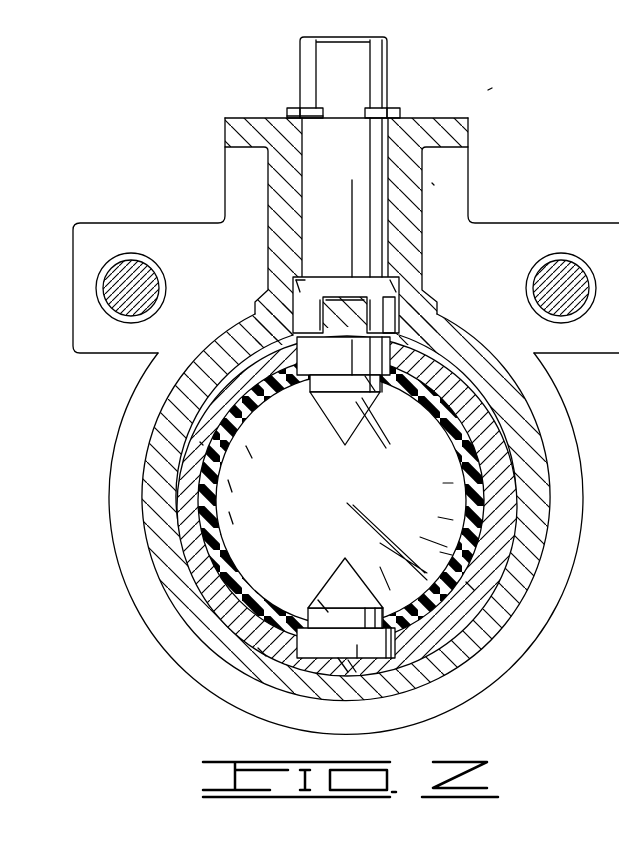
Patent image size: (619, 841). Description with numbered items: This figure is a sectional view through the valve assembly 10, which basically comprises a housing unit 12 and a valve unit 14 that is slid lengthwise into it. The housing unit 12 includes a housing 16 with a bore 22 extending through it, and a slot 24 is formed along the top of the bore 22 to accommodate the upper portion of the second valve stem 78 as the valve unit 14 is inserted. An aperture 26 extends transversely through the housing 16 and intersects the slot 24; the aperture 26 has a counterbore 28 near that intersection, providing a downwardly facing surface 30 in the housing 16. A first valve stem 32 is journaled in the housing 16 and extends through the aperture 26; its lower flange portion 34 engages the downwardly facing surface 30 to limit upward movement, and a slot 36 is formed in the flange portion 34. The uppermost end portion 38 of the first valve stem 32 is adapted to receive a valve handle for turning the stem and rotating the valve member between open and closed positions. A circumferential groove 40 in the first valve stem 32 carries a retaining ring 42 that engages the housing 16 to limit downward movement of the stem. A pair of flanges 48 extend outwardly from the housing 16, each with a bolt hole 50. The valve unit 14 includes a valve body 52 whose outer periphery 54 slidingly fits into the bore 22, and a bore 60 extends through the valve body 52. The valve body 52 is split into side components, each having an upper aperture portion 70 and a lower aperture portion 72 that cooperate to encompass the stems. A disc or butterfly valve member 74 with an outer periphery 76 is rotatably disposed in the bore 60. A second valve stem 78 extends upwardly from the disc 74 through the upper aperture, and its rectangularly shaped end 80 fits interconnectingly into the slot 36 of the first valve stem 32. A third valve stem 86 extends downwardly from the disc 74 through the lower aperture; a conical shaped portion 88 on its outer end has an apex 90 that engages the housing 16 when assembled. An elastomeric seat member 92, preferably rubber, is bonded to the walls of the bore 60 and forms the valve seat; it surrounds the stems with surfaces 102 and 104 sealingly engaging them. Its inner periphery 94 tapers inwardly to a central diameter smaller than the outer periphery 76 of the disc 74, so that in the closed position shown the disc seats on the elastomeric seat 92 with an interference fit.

The valve assembly 10 is at (490, 88).
The housing unit 12 is at (432, 185).
The valve unit 14 is at (520, 452).
The housing 16 is at (407, 238).
The bore 22 is at (203, 572).
The slot 24 is at (290, 320).
The aperture 26 is at (303, 160).
The counterbore 28 is at (303, 285).
The downwardly facing surface 30 is at (400, 285).
The first valve stem 32 is at (367, 148).
The lower flange portion 34 is at (303, 288).
The slot 36 is at (373, 313).
The uppermost end portion 38 is at (363, 65).
The circumferential groove 40 is at (317, 110).
The retaining ring 42 is at (293, 112).
The flanges 48 is at (112, 226).
The bolt hole 50 is at (108, 279).
The valve body 52 is at (200, 442).
The outer periphery 54 is at (262, 652).
The bore 60 is at (470, 585).
The upper aperture portion 70 is at (317, 403).
The lower aperture portion 72 is at (302, 640).
The disc or butterfly valve member 74 is at (443, 560).
The outer periphery 76 is at (232, 487).
The second valve stem 78 is at (365, 398).
The rectangularly shaped end 80 is at (343, 317).
The third valve stem 86 is at (377, 650).
The conical shaped portion 88 is at (343, 665).
The apex 90 is at (352, 668).
The elastomeric seat member 92 is at (233, 517).
The inner periphery 94 is at (250, 452).
The surface 102 is at (370, 382).
The surface 104 is at (323, 607).